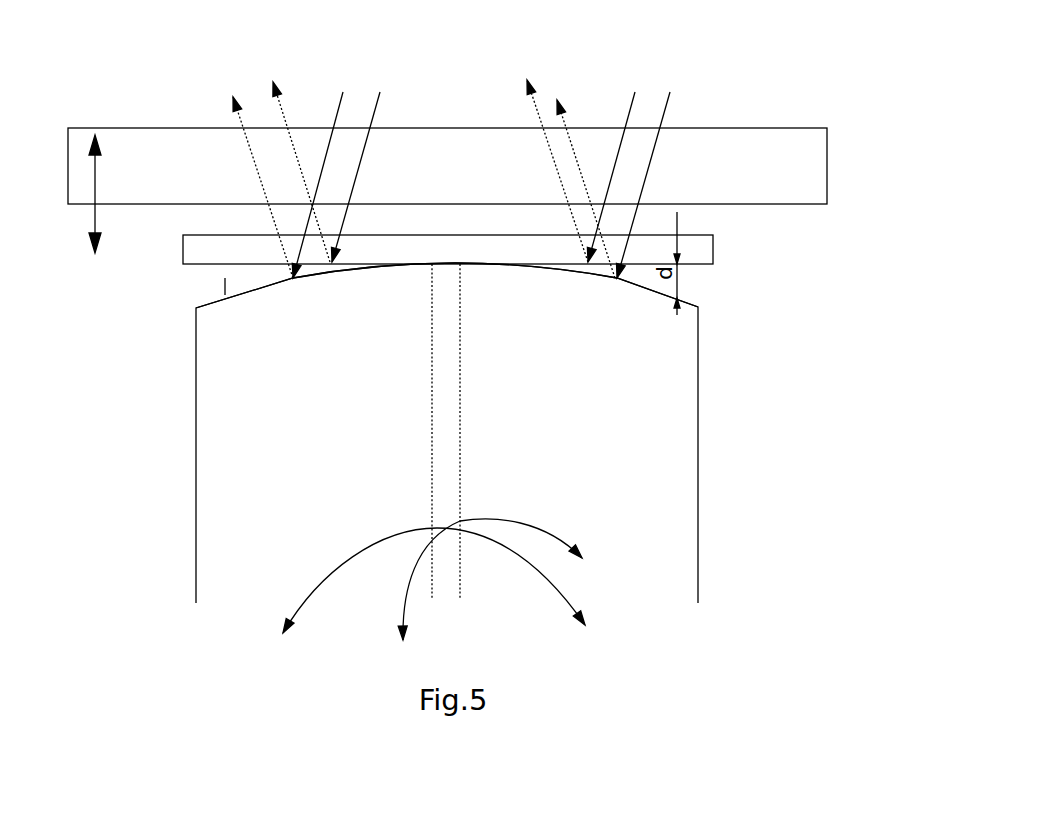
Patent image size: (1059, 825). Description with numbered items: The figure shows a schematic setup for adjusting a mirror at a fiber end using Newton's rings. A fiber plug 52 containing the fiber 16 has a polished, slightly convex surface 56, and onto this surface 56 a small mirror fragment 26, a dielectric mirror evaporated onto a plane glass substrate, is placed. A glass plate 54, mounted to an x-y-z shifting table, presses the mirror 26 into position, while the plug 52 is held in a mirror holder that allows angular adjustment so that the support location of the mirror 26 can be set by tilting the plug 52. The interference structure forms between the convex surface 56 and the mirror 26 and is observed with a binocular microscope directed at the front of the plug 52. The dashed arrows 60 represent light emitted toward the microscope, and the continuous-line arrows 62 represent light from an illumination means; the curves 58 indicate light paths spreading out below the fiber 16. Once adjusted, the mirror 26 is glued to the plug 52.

The fiber 16 is at (445, 315).
The mirror 26 is at (697, 252).
The fiber plug 52 is at (670, 393).
The glass plate 54 is at (785, 160).
The polished surface 56 is at (223, 292).
The flow lines / radiation paths 58 is at (345, 550).
The dashed arrows 60 is at (295, 150).
The continuous-line arrows 62 is at (343, 107).